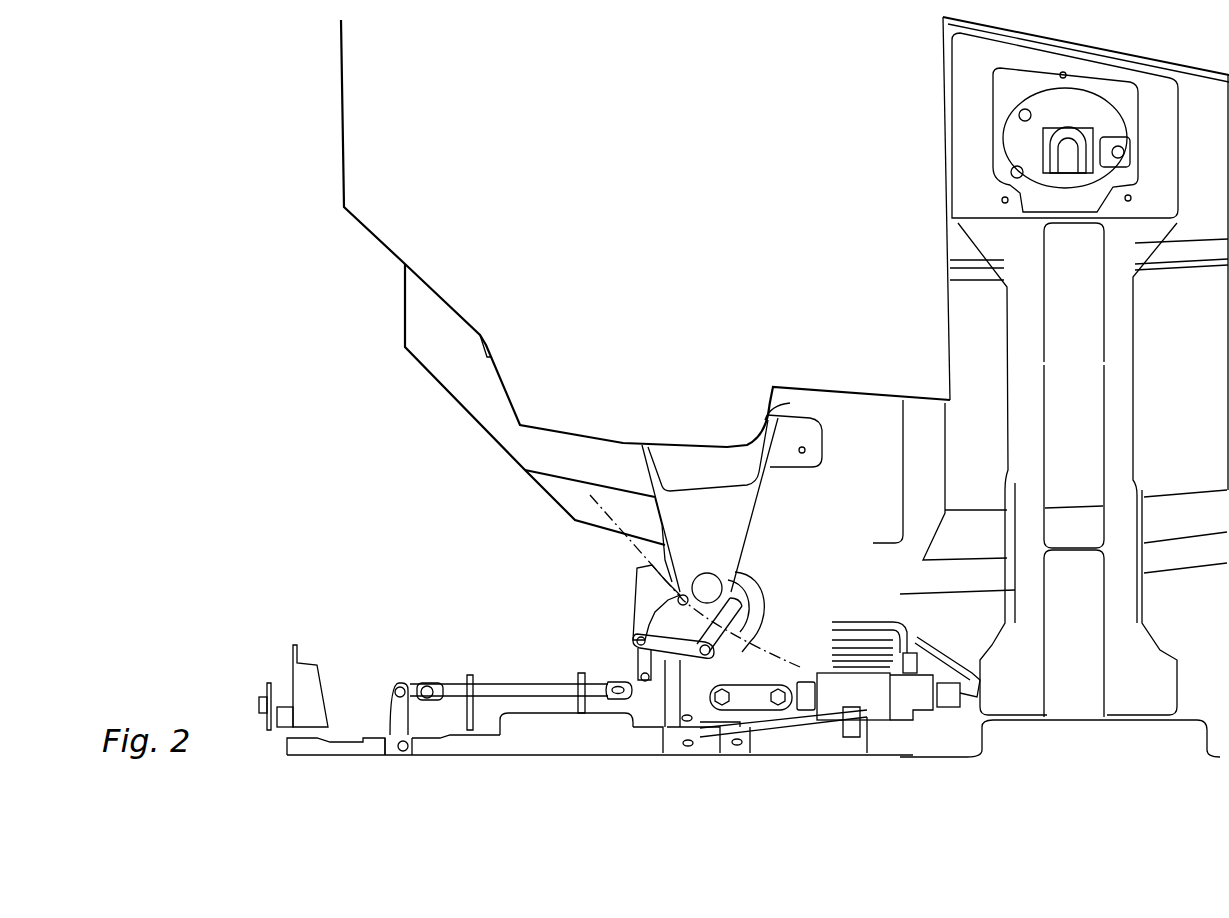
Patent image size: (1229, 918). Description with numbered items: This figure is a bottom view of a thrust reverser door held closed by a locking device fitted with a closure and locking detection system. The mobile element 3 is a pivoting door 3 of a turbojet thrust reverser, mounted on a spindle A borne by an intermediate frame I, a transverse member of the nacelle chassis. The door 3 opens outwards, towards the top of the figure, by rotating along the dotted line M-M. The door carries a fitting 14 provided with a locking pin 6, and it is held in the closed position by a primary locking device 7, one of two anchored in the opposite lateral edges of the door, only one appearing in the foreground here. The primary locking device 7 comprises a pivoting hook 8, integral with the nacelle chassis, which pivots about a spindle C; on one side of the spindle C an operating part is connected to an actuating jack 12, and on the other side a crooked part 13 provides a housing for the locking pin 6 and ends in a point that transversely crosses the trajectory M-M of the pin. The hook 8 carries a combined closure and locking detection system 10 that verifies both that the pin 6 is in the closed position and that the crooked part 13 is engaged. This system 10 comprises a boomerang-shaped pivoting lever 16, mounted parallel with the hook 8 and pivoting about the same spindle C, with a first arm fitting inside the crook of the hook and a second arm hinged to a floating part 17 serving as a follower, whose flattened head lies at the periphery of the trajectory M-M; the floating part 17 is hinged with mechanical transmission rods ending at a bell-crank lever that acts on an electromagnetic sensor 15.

The mobile element 3 is at (677, 241).
The fitting 14 is at (718, 535).
The floating part 17 is at (623, 582).
The locking pin 6 is at (680, 602).
The combined closure and locking detection system 10 is at (622, 640).
The spindle C is at (700, 641).
The pivoting lever 16 is at (728, 620).
The pivoting hook 8 is at (773, 600).
The crooked part 13 is at (682, 598).
The sensor 15 is at (293, 657).
The primary locking device 7 is at (667, 665).
The actuating jack 12 is at (907, 757).
The spindle A is at (1063, 153).
The intermediate frame I is at (1118, 386).
The trajectory M- M is at (692, 580).